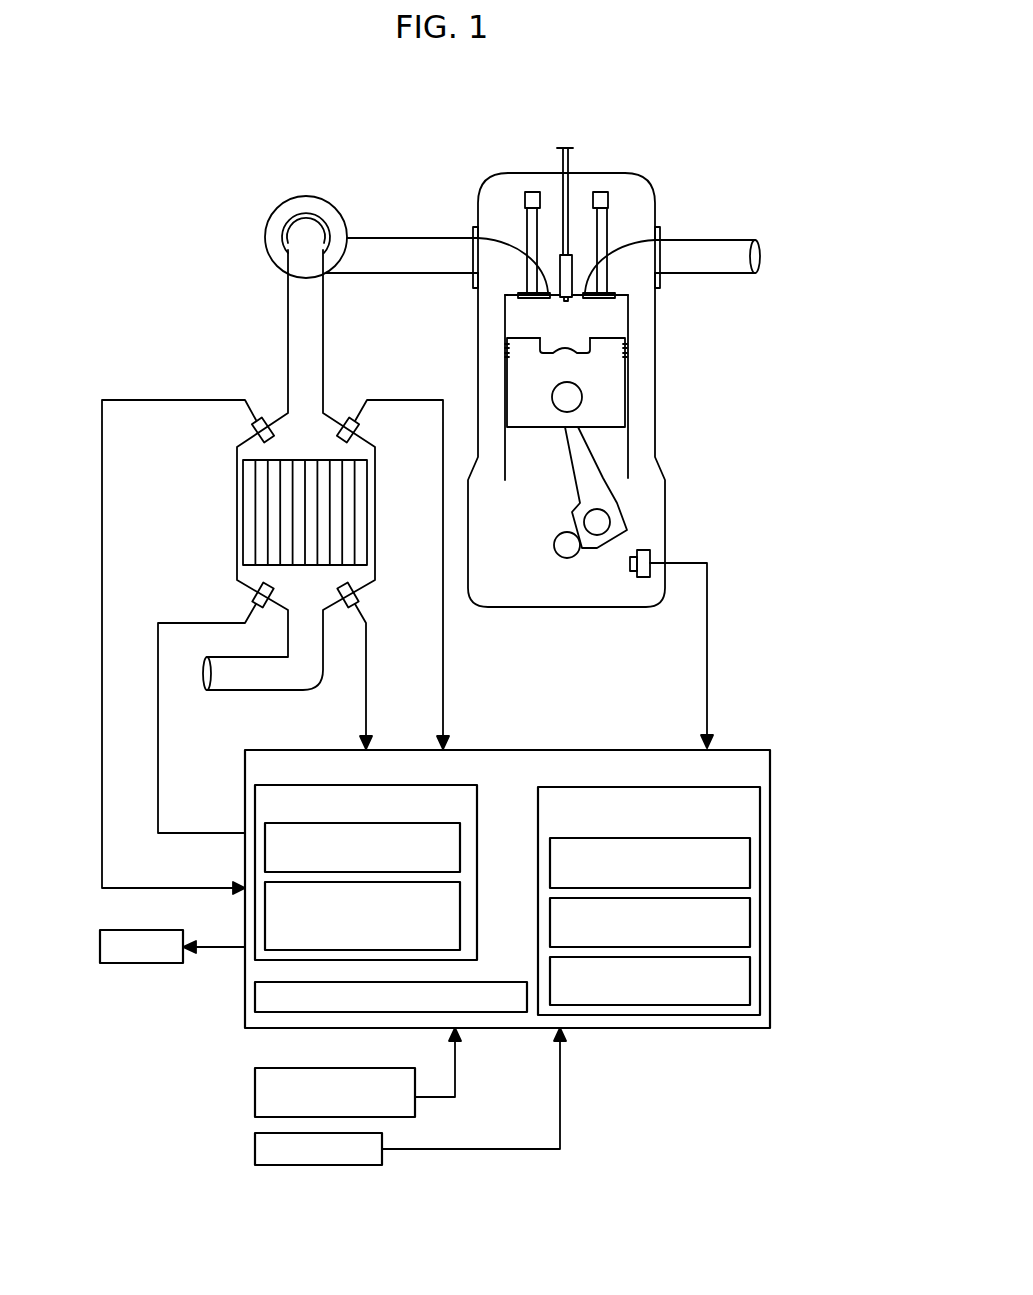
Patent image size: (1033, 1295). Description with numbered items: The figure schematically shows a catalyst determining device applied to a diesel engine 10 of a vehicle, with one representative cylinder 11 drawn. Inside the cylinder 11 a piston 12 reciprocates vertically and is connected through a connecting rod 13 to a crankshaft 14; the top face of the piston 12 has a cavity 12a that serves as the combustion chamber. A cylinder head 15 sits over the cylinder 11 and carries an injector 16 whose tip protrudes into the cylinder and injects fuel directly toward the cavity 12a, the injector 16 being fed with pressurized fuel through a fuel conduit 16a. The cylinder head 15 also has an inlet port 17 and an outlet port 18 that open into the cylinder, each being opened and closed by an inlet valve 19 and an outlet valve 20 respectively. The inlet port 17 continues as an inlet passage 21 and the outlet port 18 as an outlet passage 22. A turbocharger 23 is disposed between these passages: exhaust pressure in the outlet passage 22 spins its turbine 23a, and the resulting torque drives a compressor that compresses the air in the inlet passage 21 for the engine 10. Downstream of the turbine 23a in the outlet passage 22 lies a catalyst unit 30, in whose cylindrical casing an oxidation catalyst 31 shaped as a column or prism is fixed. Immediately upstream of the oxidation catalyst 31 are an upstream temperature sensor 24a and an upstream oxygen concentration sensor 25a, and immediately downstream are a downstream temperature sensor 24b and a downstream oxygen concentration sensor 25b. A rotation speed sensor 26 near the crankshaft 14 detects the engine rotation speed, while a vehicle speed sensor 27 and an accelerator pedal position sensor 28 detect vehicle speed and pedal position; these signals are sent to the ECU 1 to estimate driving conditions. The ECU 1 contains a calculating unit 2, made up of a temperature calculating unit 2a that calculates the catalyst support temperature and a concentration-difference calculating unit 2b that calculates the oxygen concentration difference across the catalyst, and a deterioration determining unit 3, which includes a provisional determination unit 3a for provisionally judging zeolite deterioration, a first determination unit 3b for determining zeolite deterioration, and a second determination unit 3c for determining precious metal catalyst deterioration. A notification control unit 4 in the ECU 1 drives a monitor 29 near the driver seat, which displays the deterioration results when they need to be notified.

The ECU 1 is at (550, 748).
The calculating unit 2 is at (477, 870).
The temperature calculating unit 2a is at (460, 838).
The concentration-difference calculating unit 2b is at (460, 902).
The deterioration determining unit 3 is at (683, 1015).
The provisional determination unit 3a is at (750, 867).
The first determination unit 3b is at (750, 927).
The second determination unit 3c is at (750, 980).
The notification control unit 4 is at (503, 982).
The diesel engine 10 is at (685, 342).
The cylinder 11 is at (630, 447).
The piston 12 is at (607, 383).
The cavity 12a is at (550, 346).
The connecting rod 13 is at (590, 478).
The crankshaft 14 is at (565, 552).
The cylinder head 15 is at (583, 237).
The injector 16 is at (567, 273).
The fuel conduit 16a is at (562, 195).
The inlet port 17 is at (612, 268).
The outlet port 18 is at (518, 268).
The inlet valve 19 is at (580, 223).
The outlet valve 20 is at (527, 223).
The inlet passage 21 is at (727, 238).
The outlet passage 22 is at (413, 230).
The turbocharger 23 is at (291, 190).
The turbine 23a is at (265, 235).
The upstream temperature sensor 24a is at (368, 432).
The downstream temperature sensor 24b is at (368, 600).
The upstream oxygen concentration sensor 25a is at (250, 431).
The downstream oxygen concentration sensor 25b is at (250, 598).
The rotation speed sensor 26 is at (644, 578).
The vehicle speed sensor 27 is at (255, 1093).
The accelerator pedal position sensor 28 is at (255, 1148).
The monitor 29 is at (140, 965).
The catalyst unit 30 is at (232, 503).
The oxidation catalyst 31 is at (362, 505).